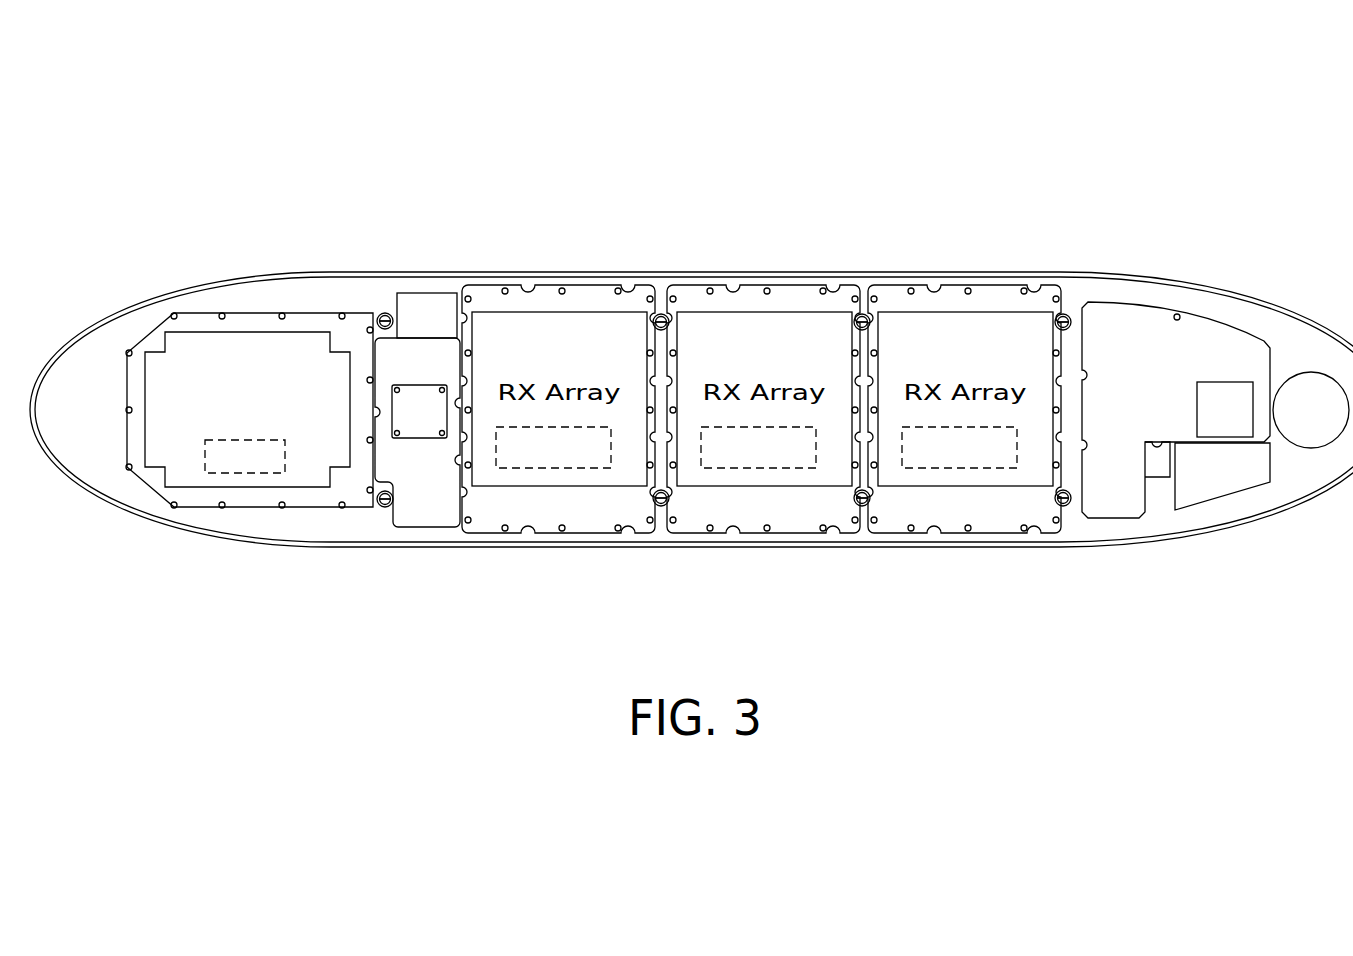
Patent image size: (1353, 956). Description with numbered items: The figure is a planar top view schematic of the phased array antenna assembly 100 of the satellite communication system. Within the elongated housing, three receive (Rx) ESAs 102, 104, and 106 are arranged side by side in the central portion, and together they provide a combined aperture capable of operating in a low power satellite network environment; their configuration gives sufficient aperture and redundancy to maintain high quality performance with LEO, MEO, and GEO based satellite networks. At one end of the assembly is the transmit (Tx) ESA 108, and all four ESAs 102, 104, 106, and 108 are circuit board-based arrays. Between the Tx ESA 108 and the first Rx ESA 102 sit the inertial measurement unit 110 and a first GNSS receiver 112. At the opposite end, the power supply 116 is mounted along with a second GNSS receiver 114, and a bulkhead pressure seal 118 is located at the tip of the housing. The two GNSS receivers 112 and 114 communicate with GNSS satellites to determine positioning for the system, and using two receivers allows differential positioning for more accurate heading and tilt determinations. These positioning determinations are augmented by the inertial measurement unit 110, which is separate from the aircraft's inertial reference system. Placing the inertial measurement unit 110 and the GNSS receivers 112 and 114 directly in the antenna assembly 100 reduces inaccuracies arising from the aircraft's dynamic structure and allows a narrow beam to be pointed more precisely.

The antenna assembly 100 is at (741, 189).
The receive (Rx) ESA 102 is at (633, 458).
The receive (Rx) ESA 104 is at (840, 460).
The receive (Rx) ESA 106 is at (1040, 460).
The transmit (Tx) ESA 108 is at (205, 352).
The inertial measurement unit 110 is at (422, 300).
The global navigation satellite system (GNSS) receiver 112 is at (415, 430).
The GNSS receiver 114 is at (1240, 390).
The power supply 116 is at (1140, 320).
The bulkhead pressure seal 118 is at (1317, 437).